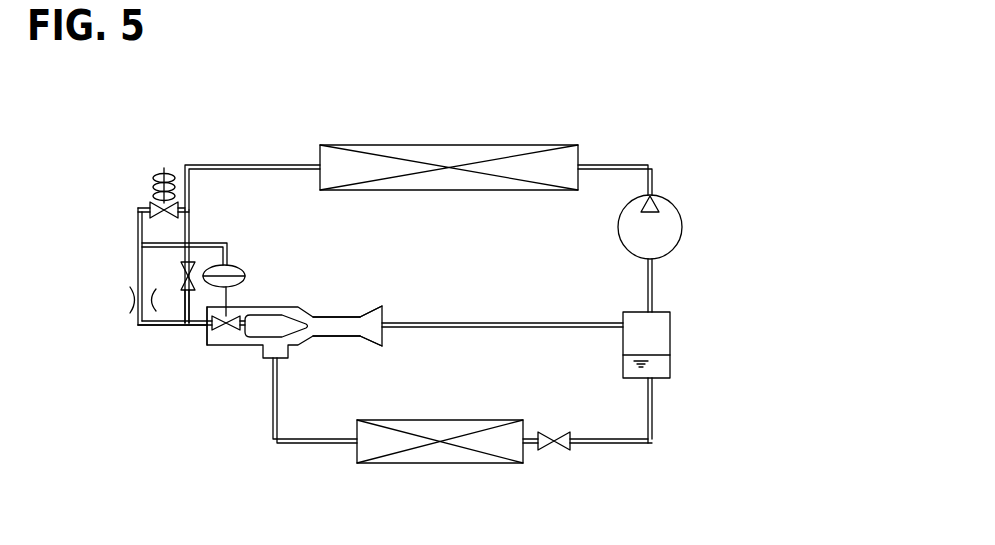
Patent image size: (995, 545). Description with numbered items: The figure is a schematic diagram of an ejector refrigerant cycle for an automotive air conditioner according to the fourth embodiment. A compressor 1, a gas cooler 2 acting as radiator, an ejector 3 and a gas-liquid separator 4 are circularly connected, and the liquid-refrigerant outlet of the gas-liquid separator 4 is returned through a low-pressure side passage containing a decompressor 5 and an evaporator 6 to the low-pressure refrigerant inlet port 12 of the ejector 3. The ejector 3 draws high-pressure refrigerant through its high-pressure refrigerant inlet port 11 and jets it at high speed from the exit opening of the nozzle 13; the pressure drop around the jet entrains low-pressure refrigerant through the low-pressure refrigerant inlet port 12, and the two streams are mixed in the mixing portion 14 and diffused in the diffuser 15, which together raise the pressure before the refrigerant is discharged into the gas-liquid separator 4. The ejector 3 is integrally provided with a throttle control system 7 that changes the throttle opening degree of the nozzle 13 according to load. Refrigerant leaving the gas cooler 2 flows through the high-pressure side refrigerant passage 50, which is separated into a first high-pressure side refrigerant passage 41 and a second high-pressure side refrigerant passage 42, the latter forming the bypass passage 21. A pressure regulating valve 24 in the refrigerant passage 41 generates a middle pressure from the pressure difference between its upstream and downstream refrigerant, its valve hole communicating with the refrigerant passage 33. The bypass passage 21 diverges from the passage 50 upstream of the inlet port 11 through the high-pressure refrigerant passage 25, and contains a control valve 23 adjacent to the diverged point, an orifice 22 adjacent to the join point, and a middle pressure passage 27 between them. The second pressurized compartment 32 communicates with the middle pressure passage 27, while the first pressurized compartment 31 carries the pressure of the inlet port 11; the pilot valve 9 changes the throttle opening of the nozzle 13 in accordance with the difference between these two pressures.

The compressor 1 is at (681, 228).
The gas cooler 2 is at (443, 153).
The ejector 3 is at (336, 311).
The gas-liquid separator 4 is at (662, 339).
The decompressor 5 is at (561, 450).
The evaporator 6 is at (450, 456).
The throttle control system 7 is at (173, 341).
The pilot valve 9 is at (227, 331).
The high-pressure refrigerant inlet port 11 is at (207, 343).
The low-pressure refrigerant inlet port 12 is at (267, 362).
The nozzle 13 is at (287, 315).
The mixing portion 14 is at (329, 336).
The diffuser 15 is at (372, 340).
The bypass passage 21 is at (137, 323).
The orifice 22 is at (154, 300).
The control valve 23 is at (152, 180).
The pressure regulating valve 24 is at (182, 265).
The high-pressure refrigerant passage 25 is at (181, 208).
The middle pressure passage 27 is at (138, 272).
The first pressurized compartment 31 is at (232, 280).
The second pressurized compartment 32 is at (230, 270).
The refrigerant passage 33 is at (188, 308).
The first high-pressure side refrigerant passage 41 is at (192, 220).
The second high-pressure side refrigerant passage 42 is at (83, 304).
The high-pressure side refrigerant passage 50 is at (264, 165).